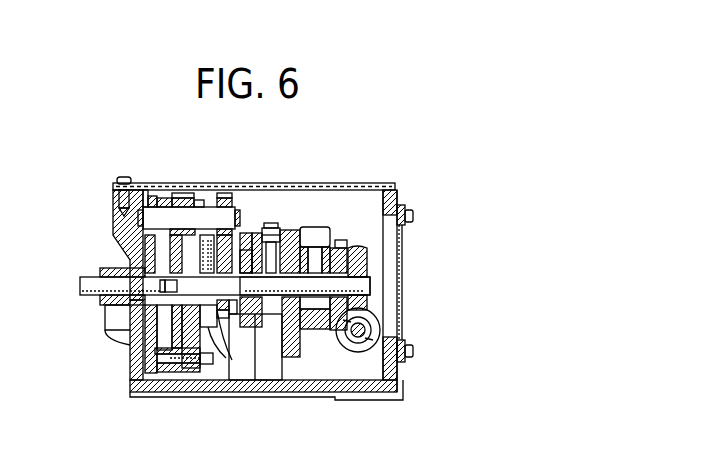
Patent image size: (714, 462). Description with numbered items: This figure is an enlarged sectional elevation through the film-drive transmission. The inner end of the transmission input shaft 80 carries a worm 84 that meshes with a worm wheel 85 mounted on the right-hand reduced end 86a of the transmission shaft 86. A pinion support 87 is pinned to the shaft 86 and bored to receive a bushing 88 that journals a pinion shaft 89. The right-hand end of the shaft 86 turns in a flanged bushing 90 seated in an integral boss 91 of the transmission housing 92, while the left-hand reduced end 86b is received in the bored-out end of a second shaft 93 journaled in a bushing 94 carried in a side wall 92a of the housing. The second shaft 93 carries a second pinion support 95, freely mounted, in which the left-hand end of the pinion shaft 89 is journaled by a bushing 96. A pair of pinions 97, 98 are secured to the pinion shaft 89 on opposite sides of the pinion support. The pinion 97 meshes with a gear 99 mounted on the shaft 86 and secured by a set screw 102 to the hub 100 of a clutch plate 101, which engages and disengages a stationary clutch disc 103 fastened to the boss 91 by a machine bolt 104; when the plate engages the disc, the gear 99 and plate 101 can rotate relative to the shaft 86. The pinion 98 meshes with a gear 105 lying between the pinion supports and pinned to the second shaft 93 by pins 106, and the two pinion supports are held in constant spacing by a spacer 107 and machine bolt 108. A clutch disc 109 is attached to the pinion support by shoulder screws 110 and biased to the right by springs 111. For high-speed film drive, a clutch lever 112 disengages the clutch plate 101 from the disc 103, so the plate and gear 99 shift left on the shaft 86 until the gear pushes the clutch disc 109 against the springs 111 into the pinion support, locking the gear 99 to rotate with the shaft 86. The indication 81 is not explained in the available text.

The transmission input shaft 80 is at (372, 330).
The gear housing 81 is at (404, 190).
The worm 84 is at (386, 320).
The worm wheel 85 is at (368, 265).
The transmission shaft 86 is at (262, 298).
The right-hand reduced end 86a is at (370, 285).
The left-hand reduced end 86b is at (178, 286).
The pinion support 87 is at (206, 366).
The bushing 88 is at (196, 200).
The pinion shaft 89 is at (236, 218).
The flanged bushing 90 is at (340, 252).
The integral boss 91 is at (314, 226).
The transmission housing 92 is at (283, 393).
The side wall 92a is at (120, 338).
The second shaft 93 is at (100, 283).
The bushing 94 is at (112, 306).
The second pinion support 95 is at (152, 197).
The bushing 96 is at (160, 198).
The pinion 97 is at (222, 196).
The pinion 98 is at (180, 200).
The gear 99 is at (256, 240).
The hub 100 is at (226, 312).
The clutch plate 101 is at (260, 347).
The set screw 102 is at (278, 232).
The stationary clutch disc 103 is at (300, 238).
The machine bolt 104 is at (338, 247).
The gear 105 is at (168, 368).
The pins 106 is at (150, 340).
The spacer 107 is at (176, 370).
The machine bolt 108 is at (226, 362).
The clutch disc 109 is at (218, 318).
The shoulder screws 110 is at (214, 325).
The springs 111 is at (218, 214).
The clutch lever 112 is at (282, 228).